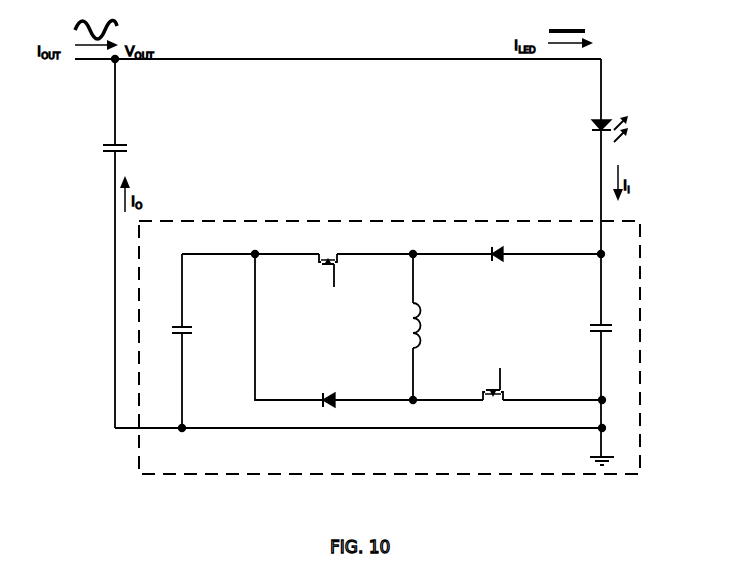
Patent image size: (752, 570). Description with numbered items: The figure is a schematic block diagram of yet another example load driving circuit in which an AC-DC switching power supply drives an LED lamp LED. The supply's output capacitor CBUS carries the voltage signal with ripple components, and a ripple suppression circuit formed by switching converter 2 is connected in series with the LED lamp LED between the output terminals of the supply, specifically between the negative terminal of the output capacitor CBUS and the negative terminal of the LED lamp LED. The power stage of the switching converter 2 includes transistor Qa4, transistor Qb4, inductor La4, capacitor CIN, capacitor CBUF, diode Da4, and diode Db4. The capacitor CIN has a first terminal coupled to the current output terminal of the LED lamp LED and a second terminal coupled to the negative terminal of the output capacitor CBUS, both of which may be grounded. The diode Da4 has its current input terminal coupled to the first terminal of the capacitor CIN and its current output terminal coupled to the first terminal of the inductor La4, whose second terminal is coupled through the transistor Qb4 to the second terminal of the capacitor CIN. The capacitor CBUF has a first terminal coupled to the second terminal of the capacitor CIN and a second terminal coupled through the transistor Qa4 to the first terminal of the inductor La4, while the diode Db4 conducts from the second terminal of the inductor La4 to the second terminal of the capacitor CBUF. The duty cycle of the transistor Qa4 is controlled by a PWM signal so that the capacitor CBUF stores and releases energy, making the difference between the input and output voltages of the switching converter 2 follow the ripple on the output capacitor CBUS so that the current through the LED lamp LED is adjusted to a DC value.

The switching converter 2 is at (382, 221).
The LED lamp LED is at (590, 129).
The output capacitor CBUS is at (97, 154).
The capacitor CBUF is at (196, 345).
The capacitor CIN is at (588, 328).
The transistor Qa4 is at (331, 260).
The transistor Qb4 is at (495, 397).
The diode Da4 is at (496, 246).
The diode Db4 is at (329, 387).
The inductor La4 is at (427, 325).